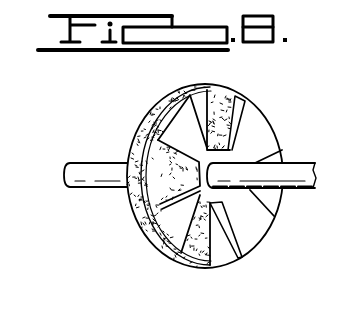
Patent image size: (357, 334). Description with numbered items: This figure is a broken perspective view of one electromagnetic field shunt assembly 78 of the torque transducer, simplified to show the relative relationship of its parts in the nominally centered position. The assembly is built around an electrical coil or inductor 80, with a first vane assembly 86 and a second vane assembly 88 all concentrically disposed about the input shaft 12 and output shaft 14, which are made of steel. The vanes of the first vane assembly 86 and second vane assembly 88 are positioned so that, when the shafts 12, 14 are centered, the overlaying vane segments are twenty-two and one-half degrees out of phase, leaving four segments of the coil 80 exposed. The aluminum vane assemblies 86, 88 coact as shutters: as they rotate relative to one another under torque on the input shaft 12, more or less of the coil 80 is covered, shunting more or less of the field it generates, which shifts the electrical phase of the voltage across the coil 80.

The input shaft 12 is at (97, 145).
The output shaft 14 is at (298, 165).
The electromagnetic field shunt assembly 78 is at (155, 252).
The coil 80 is at (148, 125).
The first vane assembly 86 is at (203, 96).
The second vane assembly 88 is at (255, 113).